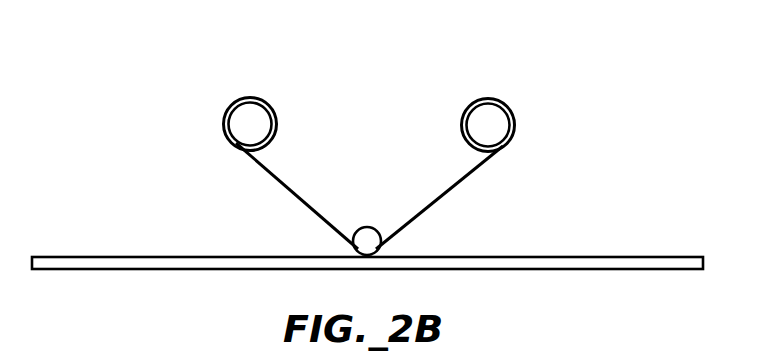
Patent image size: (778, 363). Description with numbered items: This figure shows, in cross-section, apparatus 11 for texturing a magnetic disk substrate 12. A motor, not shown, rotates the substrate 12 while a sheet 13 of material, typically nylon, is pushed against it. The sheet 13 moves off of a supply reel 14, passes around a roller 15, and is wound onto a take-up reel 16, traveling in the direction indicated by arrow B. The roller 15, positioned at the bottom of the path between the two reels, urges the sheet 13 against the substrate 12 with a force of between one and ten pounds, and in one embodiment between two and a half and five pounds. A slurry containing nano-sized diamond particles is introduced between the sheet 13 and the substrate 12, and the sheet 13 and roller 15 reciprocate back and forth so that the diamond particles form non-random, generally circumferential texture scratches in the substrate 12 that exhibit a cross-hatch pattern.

The apparatus 11 is at (437, 85).
The substrate 12 is at (588, 256).
The sheet 13 is at (452, 192).
The supply reel 14 is at (255, 127).
The roller 15 is at (367, 226).
The take-up reel 16 is at (493, 122).
The arrow B is at (283, 219).